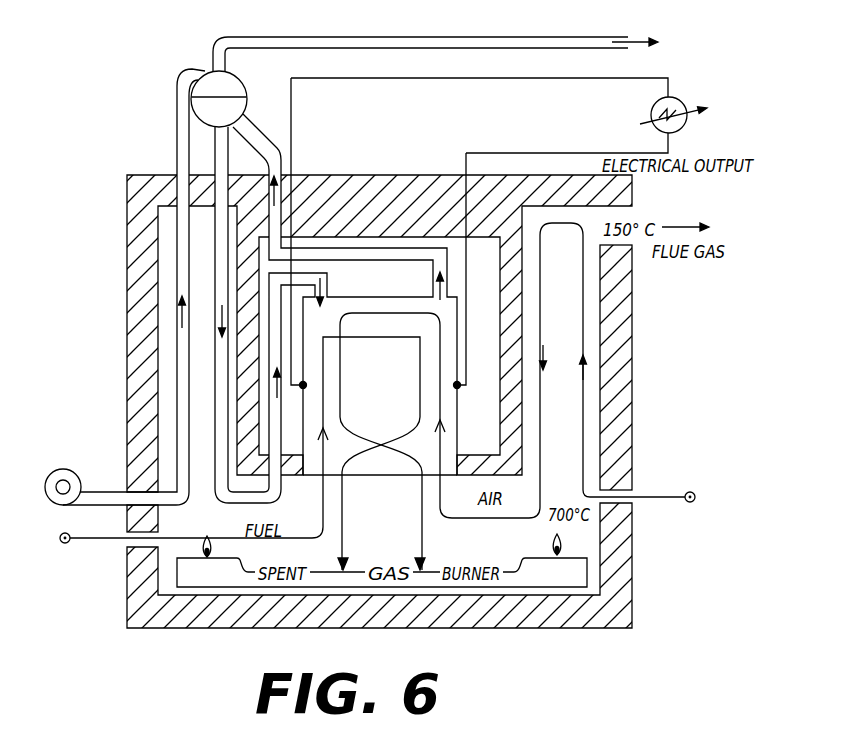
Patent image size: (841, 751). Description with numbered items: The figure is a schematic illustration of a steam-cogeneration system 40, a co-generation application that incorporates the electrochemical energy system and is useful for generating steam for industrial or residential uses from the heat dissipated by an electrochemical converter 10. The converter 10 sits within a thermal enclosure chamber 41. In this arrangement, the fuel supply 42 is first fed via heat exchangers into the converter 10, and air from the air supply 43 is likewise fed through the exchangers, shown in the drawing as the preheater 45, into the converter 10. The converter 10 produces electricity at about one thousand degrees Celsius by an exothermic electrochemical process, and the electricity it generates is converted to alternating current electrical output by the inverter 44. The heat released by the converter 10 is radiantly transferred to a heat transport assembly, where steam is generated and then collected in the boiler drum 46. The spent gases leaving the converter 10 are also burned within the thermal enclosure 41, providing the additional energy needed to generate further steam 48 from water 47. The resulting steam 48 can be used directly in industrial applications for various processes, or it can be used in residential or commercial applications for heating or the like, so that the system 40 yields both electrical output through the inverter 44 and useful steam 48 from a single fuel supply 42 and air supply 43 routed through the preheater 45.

The electrochemical converter 10 is at (327, 337).
The steam-cogeneration system 40 is at (428, 26).
The thermal enclosure chamber 41 is at (633, 393).
The fuel supply 42 is at (182, 525).
The air supply 43 is at (670, 485).
The inverter 44 is at (680, 93).
The air preheater 45 is at (567, 290).
The boiler drum 46 is at (197, 88).
The water 47 is at (121, 287).
The steam 48 is at (642, 28).